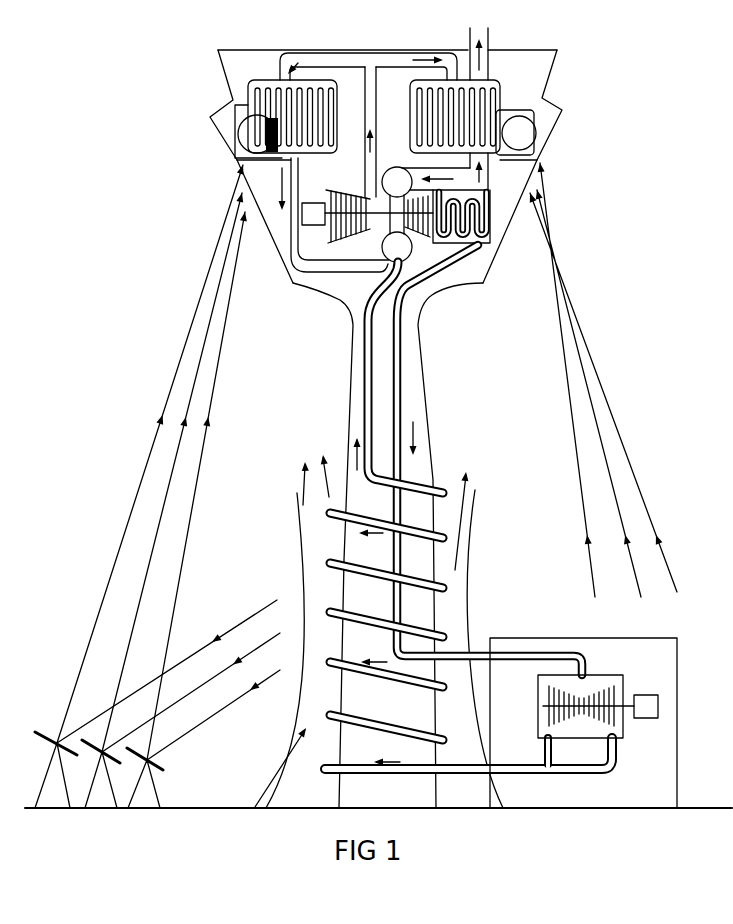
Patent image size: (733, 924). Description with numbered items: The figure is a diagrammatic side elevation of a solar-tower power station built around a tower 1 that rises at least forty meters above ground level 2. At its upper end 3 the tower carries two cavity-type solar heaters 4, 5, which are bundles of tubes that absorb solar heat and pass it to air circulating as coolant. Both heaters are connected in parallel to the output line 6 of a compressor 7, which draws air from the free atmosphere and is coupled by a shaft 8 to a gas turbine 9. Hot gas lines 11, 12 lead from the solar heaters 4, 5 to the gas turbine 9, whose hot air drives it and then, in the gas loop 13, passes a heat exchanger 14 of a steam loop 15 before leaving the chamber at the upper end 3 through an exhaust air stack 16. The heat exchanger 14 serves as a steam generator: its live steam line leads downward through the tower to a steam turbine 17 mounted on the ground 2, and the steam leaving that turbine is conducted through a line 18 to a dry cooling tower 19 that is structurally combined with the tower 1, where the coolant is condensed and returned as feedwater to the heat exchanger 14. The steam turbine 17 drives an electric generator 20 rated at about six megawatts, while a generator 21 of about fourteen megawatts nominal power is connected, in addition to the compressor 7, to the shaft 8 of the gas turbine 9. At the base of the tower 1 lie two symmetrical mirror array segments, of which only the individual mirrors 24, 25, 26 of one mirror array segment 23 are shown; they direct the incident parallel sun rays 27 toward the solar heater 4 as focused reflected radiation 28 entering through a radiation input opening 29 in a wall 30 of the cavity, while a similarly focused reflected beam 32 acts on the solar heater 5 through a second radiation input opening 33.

The tower 1 is at (420, 420).
The ground level 2 is at (690, 807).
The upper end 3 is at (357, 108).
The solar heater 4 is at (252, 88).
The solar heater 5 is at (500, 95).
The output line 6 is at (376, 97).
The compressor 7 is at (340, 193).
The shaft 8 is at (382, 232).
The gas turbine 9 is at (421, 243).
The hot gas line 11 is at (297, 190).
The hot gas line 12 is at (410, 155).
The gas loop 13 is at (325, 272).
The heat exchanger 14 is at (483, 227).
The steam loop 15 is at (372, 378).
The exhaust air stack 16 is at (517, 25).
The steam turbine 17 is at (603, 675).
The line 18 is at (468, 770).
The dry cooling tower 19 is at (313, 573).
The electric generator 20 is at (657, 692).
The generator 21 is at (307, 220).
The mirror array segment 23 is at (88, 787).
The mirror 24 is at (50, 744).
The mirror 25 is at (110, 760).
The mirror 26 is at (157, 767).
The sun rays 27 is at (267, 680).
The reflected radiation 28 is at (197, 470).
The radiation input opening 29 is at (242, 136).
The wall 30 is at (235, 121).
The reflected beam 32 is at (568, 425).
The second radiation input opening 33 is at (537, 133).